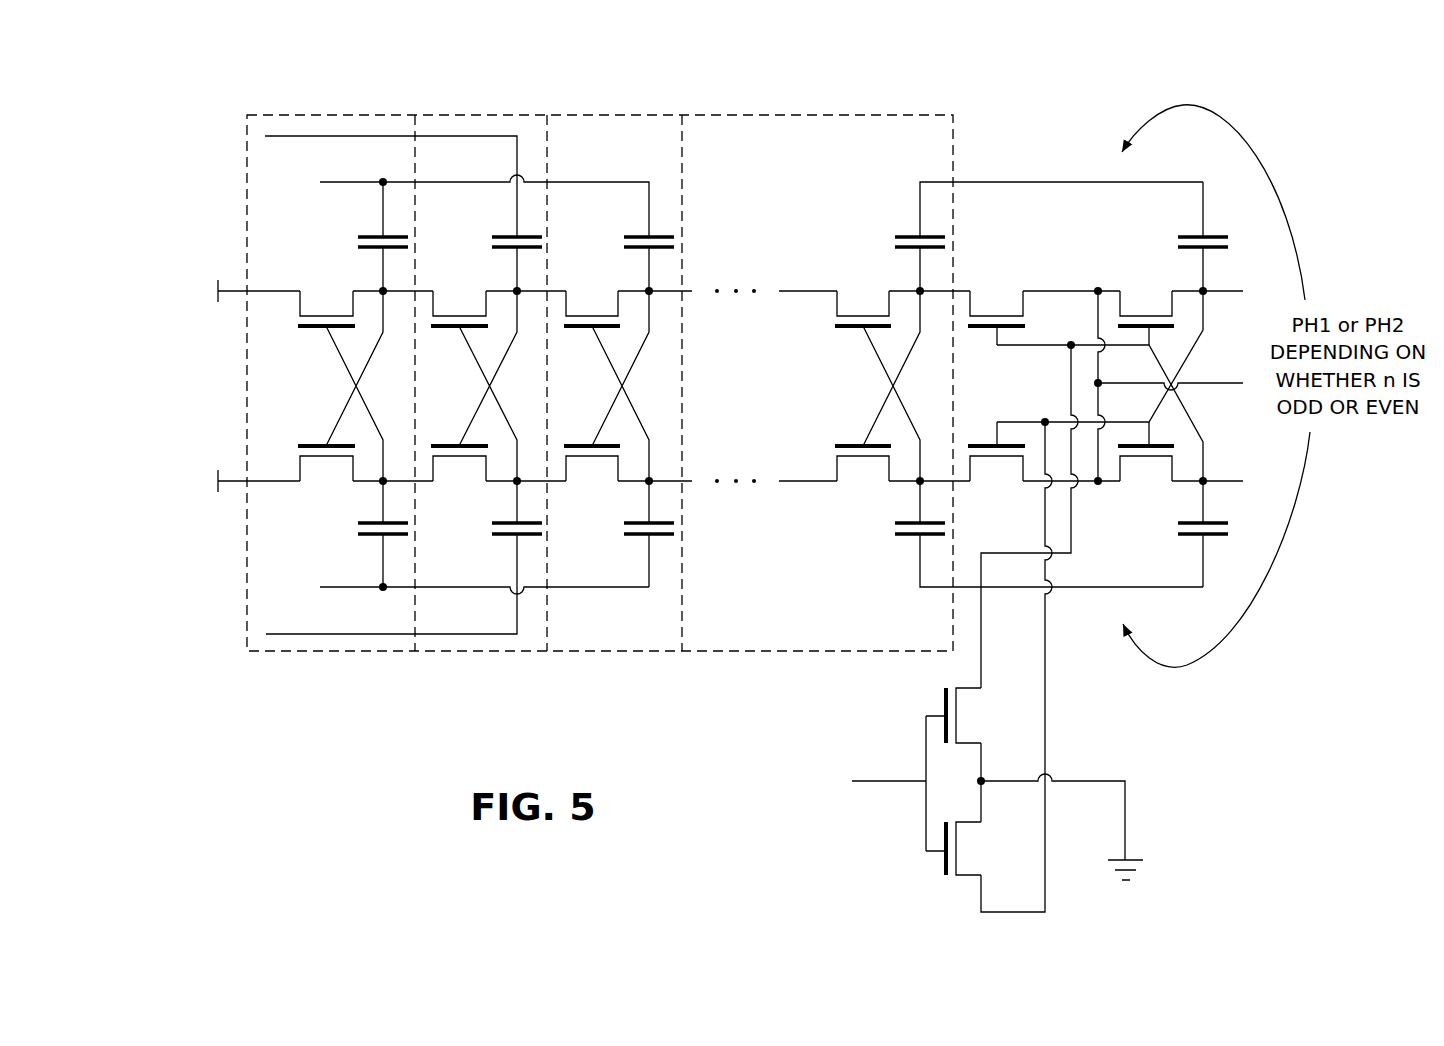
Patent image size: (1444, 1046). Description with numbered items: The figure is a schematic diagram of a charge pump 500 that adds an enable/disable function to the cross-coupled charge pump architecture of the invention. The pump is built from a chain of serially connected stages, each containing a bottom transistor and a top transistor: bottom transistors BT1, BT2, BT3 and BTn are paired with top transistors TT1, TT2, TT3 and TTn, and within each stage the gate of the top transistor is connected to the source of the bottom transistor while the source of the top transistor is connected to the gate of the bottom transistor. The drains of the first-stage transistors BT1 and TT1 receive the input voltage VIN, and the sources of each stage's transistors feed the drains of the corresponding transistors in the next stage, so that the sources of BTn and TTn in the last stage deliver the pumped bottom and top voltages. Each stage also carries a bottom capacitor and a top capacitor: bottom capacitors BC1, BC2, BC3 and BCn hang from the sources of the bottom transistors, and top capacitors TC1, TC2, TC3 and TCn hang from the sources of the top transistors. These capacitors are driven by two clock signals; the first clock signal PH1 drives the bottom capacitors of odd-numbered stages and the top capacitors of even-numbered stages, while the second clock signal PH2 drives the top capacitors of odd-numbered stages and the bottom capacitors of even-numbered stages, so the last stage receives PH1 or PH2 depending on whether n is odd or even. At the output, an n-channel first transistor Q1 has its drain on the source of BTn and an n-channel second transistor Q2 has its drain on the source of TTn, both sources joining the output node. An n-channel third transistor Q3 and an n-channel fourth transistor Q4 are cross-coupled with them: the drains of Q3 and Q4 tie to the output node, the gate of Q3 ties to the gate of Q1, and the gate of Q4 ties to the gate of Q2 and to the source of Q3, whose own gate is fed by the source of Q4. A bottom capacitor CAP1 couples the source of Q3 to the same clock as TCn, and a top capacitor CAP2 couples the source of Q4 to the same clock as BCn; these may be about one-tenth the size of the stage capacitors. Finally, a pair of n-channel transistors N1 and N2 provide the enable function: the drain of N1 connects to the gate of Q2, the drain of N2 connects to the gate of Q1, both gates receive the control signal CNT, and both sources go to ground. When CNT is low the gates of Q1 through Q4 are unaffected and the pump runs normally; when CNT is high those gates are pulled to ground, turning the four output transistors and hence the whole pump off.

The charge pump 500 is at (1255, 690).
The top transistor TT1 is at (329, 300).
The top transistor TT2 is at (462, 300).
The top transistor TT3 is at (597, 300).
The top transistor TTn is at (867, 300).
The bottom transistor BT1 is at (330, 470).
The bottom transistor BT2 is at (463, 470).
The bottom transistor BT3 is at (597, 470).
The bottom transistor BTn is at (868, 470).
The top capacitor TC1 is at (372, 236).
The top capacitor TC2 is at (506, 236).
The top capacitor TC3 is at (639, 236).
The top capacitor TCn is at (910, 236).
The bottom capacitor BC1 is at (372, 536).
The bottom capacitor BC2 is at (506, 536).
The bottom capacitor BC3 is at (639, 536).
The bottom capacitor BCn is at (910, 536).
The first transistor Q1 is at (1000, 470).
The second transistor Q2 is at (1001, 300).
The third transistor Q3 is at (1150, 470).
The fourth transistor Q4 is at (1150, 300).
The bottom capacitor CAP1 is at (1196, 537).
The top capacitor CAP2 is at (1198, 235).
The n-channel transistor N1 is at (968, 715).
The n-channel transistor N2 is at (968, 848).
The control signal CNT is at (852, 783).
The input voltage VIN is at (704, 386).
The first clock signal PH1 is at (323, 136).
The second clock signal PH2 is at (352, 182).